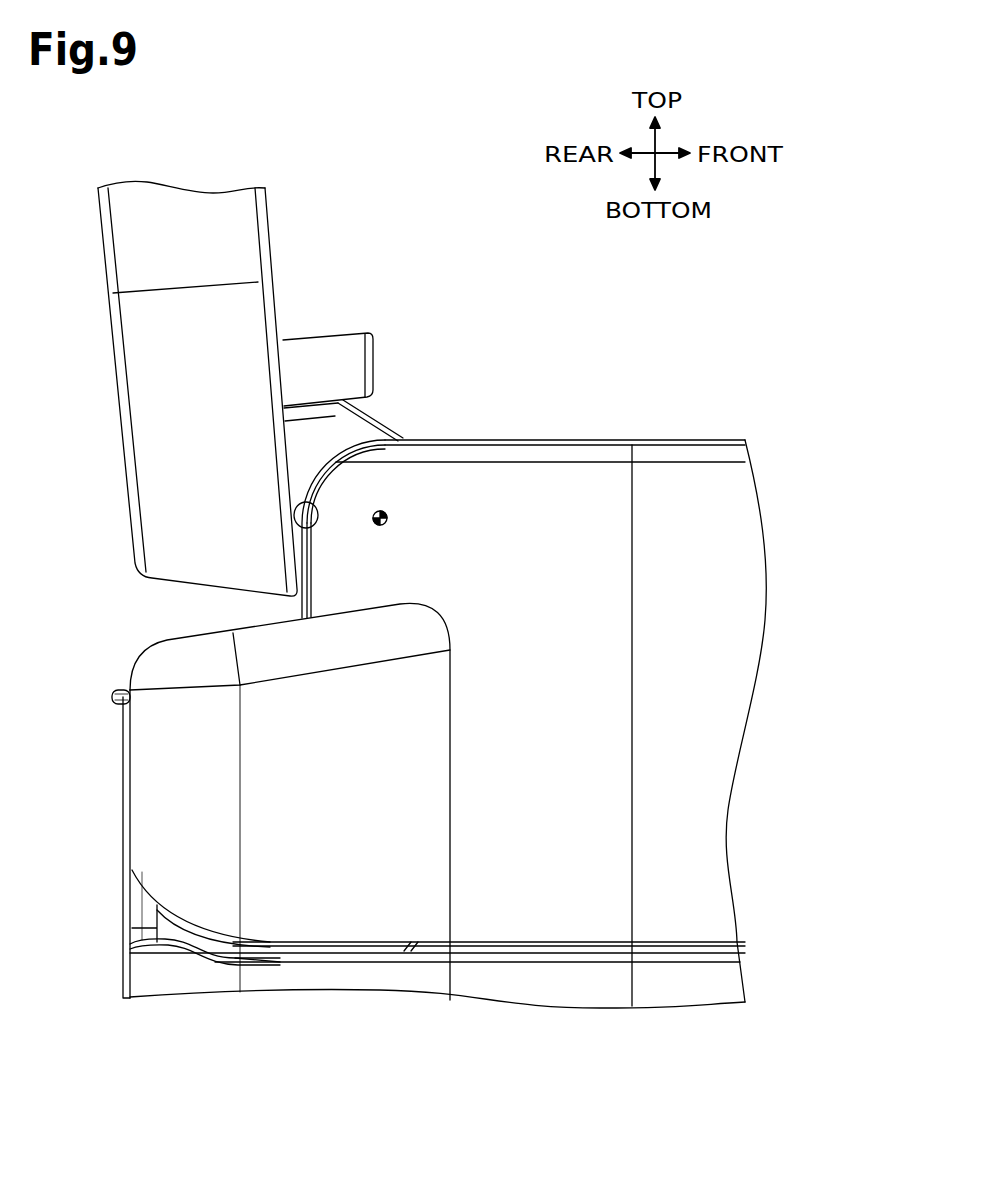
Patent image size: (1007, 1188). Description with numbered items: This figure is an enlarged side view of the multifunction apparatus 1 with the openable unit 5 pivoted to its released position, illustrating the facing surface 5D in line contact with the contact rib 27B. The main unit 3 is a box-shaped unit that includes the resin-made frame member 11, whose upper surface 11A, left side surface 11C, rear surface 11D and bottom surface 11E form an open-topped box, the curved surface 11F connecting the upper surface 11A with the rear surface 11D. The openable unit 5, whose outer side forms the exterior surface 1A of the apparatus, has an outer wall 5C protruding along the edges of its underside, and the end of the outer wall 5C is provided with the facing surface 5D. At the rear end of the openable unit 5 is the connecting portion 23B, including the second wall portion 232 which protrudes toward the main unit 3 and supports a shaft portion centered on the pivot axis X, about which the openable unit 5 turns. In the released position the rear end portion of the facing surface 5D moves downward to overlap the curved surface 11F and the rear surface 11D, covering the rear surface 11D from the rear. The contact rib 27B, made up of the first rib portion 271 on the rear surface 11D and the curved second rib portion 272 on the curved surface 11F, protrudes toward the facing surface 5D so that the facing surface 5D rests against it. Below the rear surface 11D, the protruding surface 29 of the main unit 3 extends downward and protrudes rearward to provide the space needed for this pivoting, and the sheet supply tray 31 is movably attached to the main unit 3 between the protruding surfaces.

The multifunction apparatus 1 is at (435, 240).
The exterior surface 1A is at (123, 487).
The main unit 3 is at (122, 969).
The openable unit 5 is at (240, 248).
The outer wall 5C is at (173, 215).
The facing surface 5D is at (316, 520).
The frame member 11 is at (660, 500).
The upper surface 11A is at (578, 440).
The left side surface 11C is at (700, 716).
The rear surface 11D is at (288, 601).
The bottom surface 11E is at (513, 956).
The curved surface 11F is at (335, 462).
The connecting portion 23B is at (313, 419).
The second wall portion 232 is at (362, 411).
The contact rib 27B is at (400, 531).
The first rib portion 271 is at (305, 562).
The second rib portion 272 is at (318, 488).
The protruding surface 29 is at (128, 797).
The sheet supply tray 31 is at (122, 690).
The pivot axis X is at (390, 518).